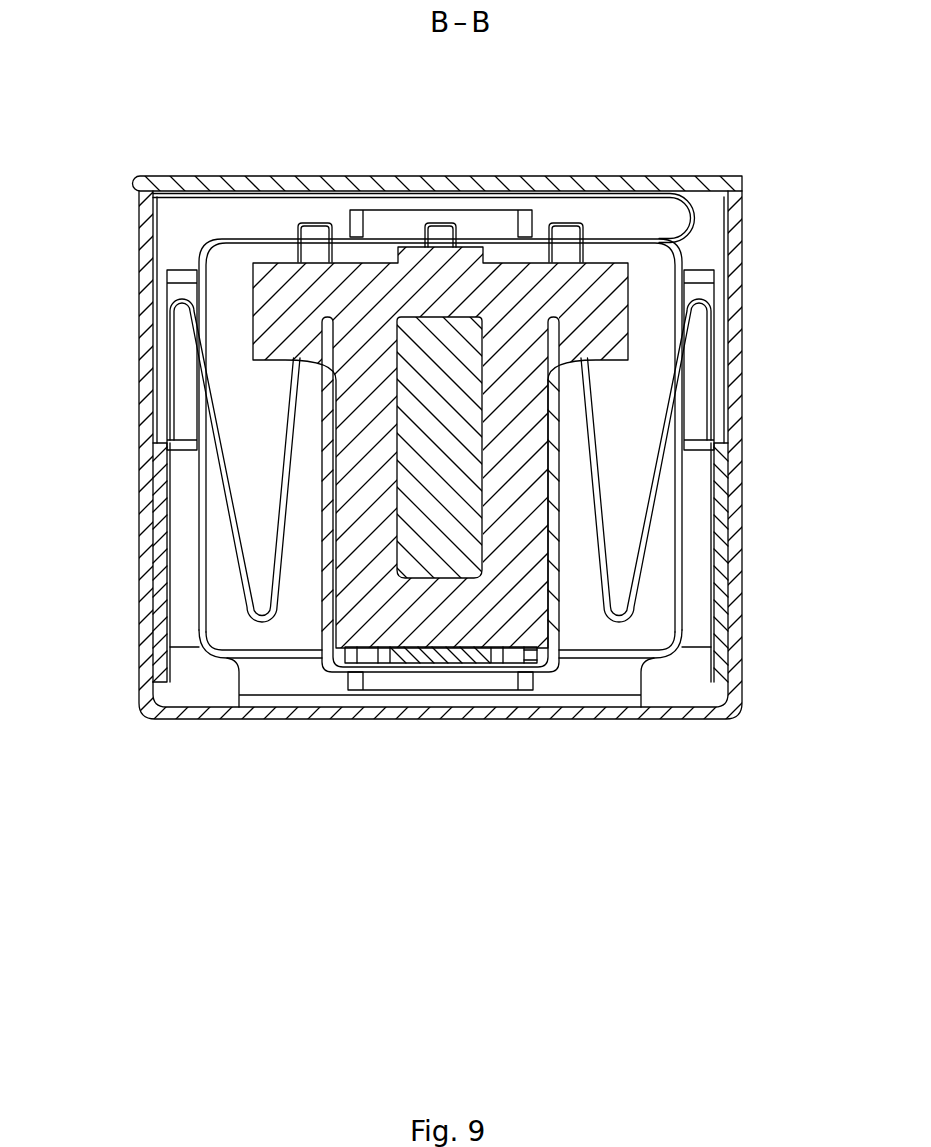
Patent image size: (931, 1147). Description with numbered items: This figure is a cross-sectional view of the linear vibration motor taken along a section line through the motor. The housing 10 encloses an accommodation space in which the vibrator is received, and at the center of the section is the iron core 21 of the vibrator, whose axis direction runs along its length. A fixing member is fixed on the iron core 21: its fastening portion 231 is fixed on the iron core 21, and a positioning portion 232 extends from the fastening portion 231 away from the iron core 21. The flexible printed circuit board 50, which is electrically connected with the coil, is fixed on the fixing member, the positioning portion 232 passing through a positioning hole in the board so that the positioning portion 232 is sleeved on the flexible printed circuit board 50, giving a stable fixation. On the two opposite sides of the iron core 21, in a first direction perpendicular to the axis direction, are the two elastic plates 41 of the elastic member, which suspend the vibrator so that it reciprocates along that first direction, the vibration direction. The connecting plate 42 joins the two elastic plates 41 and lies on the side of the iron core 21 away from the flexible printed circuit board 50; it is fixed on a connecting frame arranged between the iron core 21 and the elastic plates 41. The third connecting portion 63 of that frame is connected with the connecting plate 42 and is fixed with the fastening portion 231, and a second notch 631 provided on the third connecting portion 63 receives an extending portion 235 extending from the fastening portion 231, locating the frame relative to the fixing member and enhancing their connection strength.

The housing 10 is at (147, 235).
The iron core 21 is at (441, 368).
The fastening portion 231 is at (512, 385).
The positioning portion 232 is at (315, 242).
The extending portion 235 is at (363, 652).
The elastic plates 41 is at (222, 486).
The connecting plate 42 is at (345, 672).
The flexible printed circuit board 50 is at (694, 224).
The third connecting portion 63 is at (438, 658).
The second notch 631 is at (525, 648).